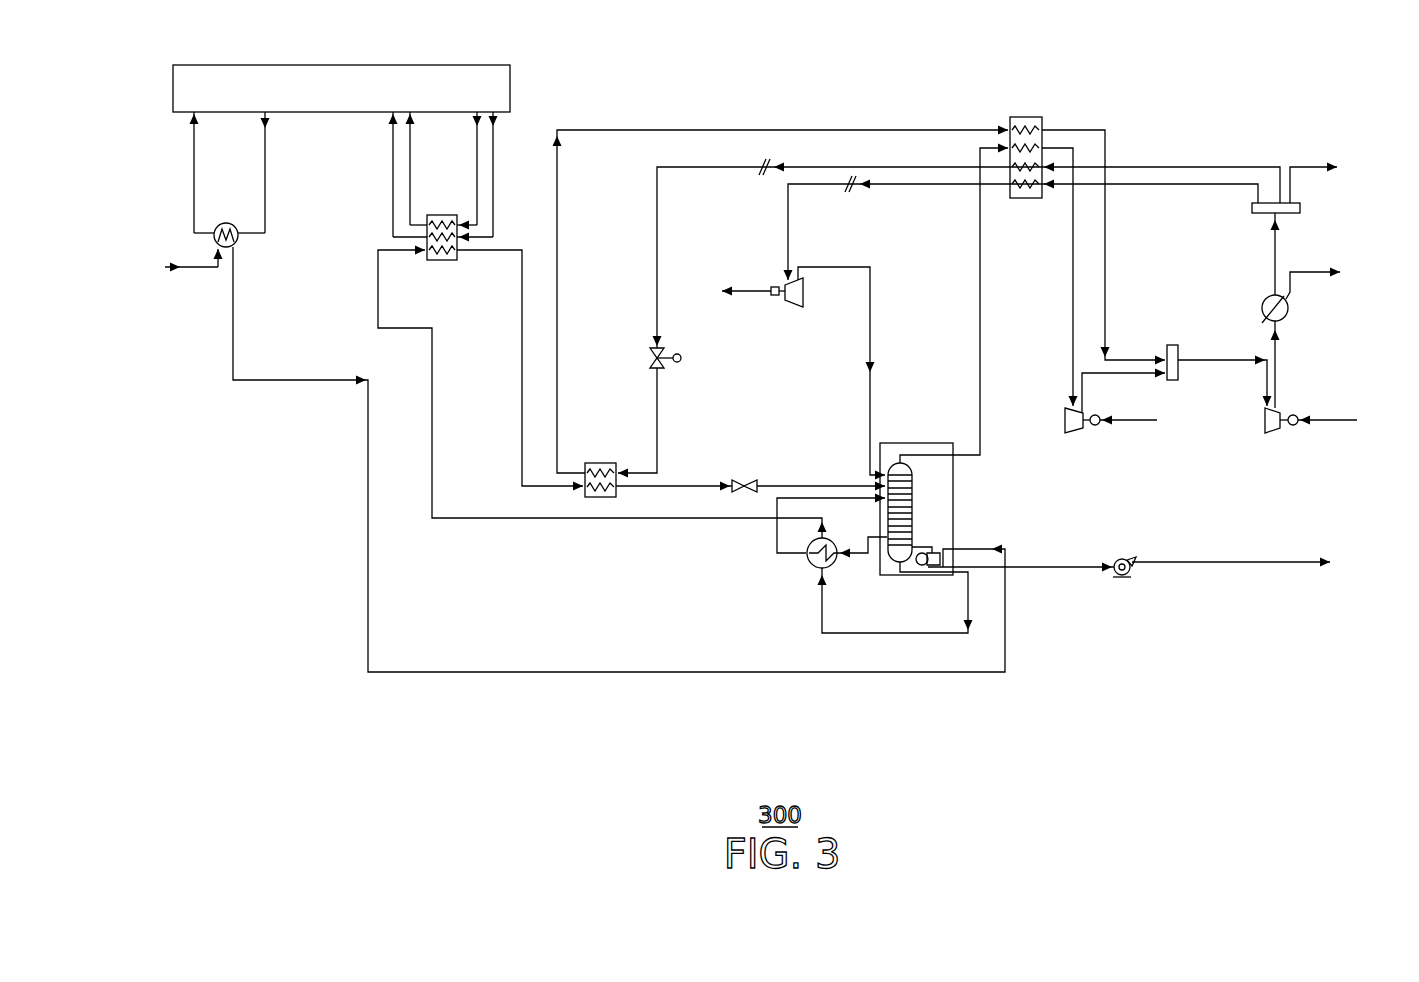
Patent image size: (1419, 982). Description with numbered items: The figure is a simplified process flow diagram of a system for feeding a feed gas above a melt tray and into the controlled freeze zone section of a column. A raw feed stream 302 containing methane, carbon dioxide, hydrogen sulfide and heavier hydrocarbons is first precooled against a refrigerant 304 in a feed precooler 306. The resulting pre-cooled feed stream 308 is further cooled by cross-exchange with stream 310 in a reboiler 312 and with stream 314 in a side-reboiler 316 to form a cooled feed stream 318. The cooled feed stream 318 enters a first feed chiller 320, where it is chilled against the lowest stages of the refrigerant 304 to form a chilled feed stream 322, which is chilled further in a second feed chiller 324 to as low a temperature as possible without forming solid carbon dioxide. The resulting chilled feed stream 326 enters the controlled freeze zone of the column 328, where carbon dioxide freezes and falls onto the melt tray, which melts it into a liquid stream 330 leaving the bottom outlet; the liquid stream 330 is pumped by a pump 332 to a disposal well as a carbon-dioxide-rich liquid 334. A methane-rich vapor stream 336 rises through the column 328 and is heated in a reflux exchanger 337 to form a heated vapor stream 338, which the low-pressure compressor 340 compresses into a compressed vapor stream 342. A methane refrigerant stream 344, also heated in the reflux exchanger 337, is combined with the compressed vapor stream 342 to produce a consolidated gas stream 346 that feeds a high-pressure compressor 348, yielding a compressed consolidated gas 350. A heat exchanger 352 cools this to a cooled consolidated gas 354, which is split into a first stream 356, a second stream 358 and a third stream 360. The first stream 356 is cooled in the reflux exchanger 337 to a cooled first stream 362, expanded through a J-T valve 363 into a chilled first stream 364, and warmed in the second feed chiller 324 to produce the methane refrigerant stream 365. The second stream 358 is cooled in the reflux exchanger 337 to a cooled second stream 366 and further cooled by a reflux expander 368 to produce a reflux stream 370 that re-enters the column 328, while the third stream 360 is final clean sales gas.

The raw feed stream 302 is at (205, 268).
The refrigerant 304 is at (327, 101).
The feed precooler 306 is at (240, 246).
The pre-cooled feed stream 308 is at (475, 673).
The stream 310 is at (912, 577).
The reboiler 312 is at (930, 552).
The stream 314 is at (823, 501).
The side-reboiler 316 is at (836, 573).
The cooled feed stream 318 is at (512, 520).
The first feed chiller 320 is at (441, 262).
The chilled feed stream 322 is at (522, 362).
The second feed chiller 324 is at (592, 462).
The chilled feed stream 326 is at (793, 483).
The column 328 is at (913, 500).
The liquid stream 330 is at (1053, 566).
The pump 332 is at (1122, 580).
The CO2-rich liquid 334 is at (1235, 561).
The vapor stream 336 is at (980, 232).
The reflux exchanger 337 is at (1025, 115).
The heated vapor stream 338 is at (1072, 292).
The low-pressure compressor 340 is at (1072, 436).
The compressed vapor stream 342 is at (1110, 375).
The CH4 refrigerant stream 344 is at (1107, 245).
The consolidated gas stream 346 is at (1223, 358).
The high-pressure compressor 348 is at (1278, 436).
The compressed consolidated gas 350 is at (1278, 350).
The heat exchanger 352 is at (1290, 312).
The cooled consolidated gas 354 is at (1280, 256).
The first stream 356 is at (1175, 167).
The second stream 358 is at (1178, 187).
The third stream 360 is at (1308, 165).
The cooled first stream 362 is at (656, 240).
The J-T valve 363 is at (650, 358).
The chilled first stream 364 is at (660, 397).
The CH4 refrigerant stream 365 is at (695, 128).
The cooled second stream 366 is at (788, 240).
The reflux expander 368 is at (793, 306).
The reflux stream 370 is at (870, 314).